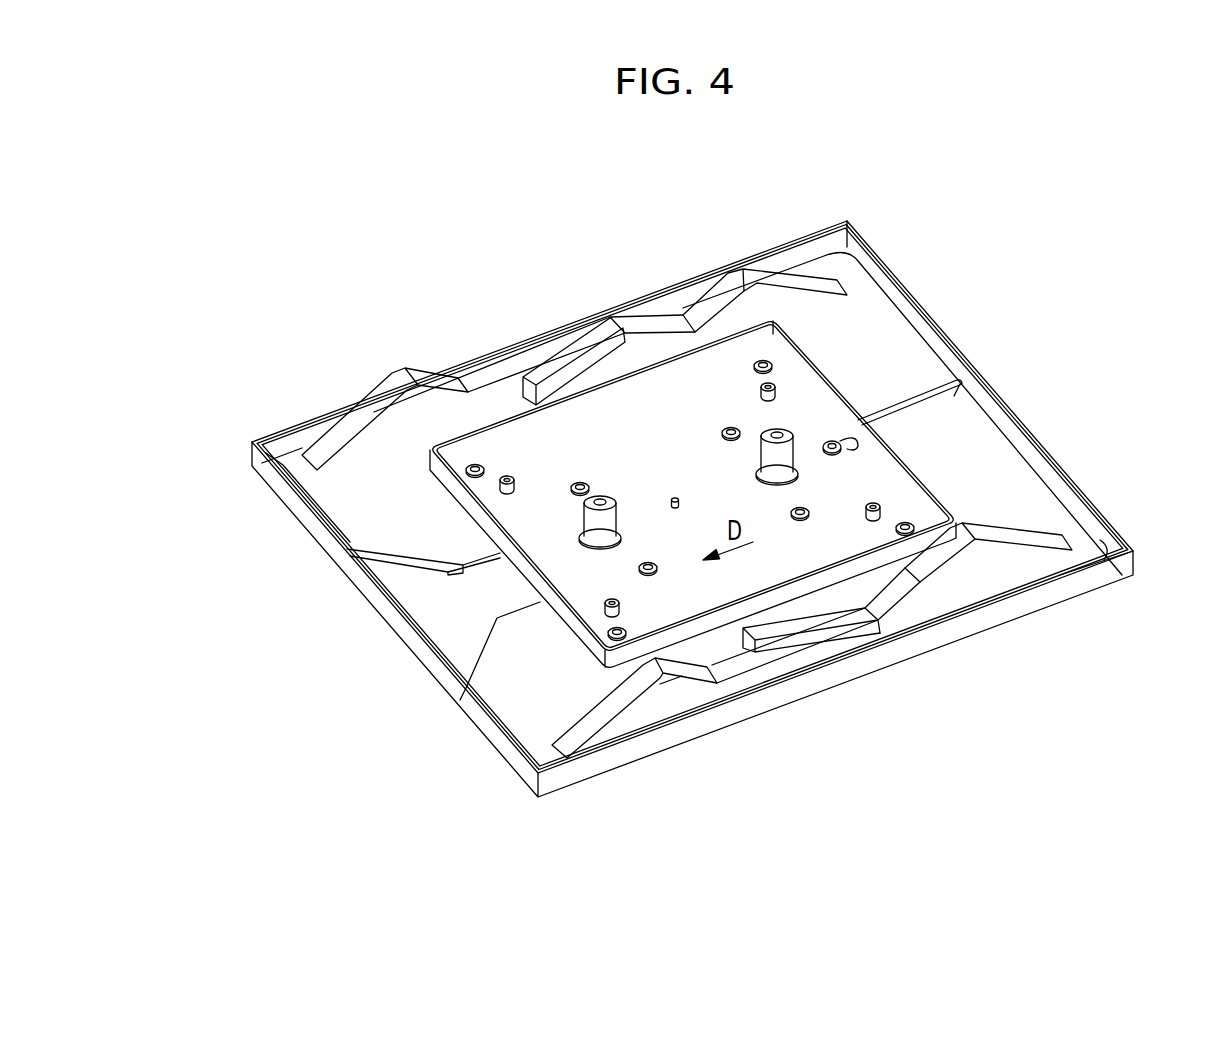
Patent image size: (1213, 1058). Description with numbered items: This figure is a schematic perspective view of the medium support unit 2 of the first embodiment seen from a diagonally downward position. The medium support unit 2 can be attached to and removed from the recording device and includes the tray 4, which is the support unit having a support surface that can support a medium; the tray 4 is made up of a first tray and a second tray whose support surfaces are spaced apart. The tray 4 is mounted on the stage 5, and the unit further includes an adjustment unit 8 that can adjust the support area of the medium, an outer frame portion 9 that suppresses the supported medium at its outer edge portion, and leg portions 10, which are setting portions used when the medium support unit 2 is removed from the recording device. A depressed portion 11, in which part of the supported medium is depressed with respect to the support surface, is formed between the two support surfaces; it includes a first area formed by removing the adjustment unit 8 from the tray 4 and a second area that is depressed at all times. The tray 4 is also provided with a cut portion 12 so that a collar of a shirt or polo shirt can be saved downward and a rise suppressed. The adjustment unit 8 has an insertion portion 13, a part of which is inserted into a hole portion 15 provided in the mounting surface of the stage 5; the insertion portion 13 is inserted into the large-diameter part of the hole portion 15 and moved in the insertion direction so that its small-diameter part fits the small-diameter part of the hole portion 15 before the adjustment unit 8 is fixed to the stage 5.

The medium support unit 2 is at (926, 190).
The tray 4 is at (338, 508).
The stage 5 is at (722, 585).
The adjustment unit 8 is at (950, 405).
The outer frame portion 9 is at (1087, 582).
The leg portions 10 is at (720, 290).
The depressed portion 11 is at (950, 436).
The cut portion 12 is at (390, 563).
The insertion portion 13 is at (831, 455).
The hole portion 15 is at (848, 450).